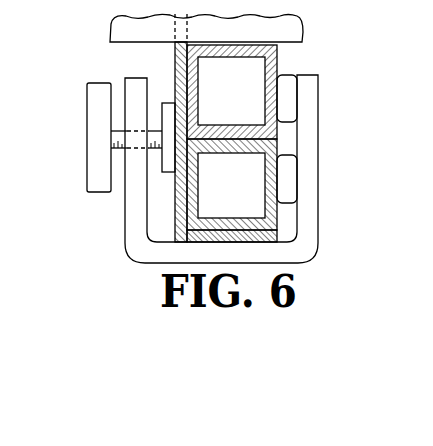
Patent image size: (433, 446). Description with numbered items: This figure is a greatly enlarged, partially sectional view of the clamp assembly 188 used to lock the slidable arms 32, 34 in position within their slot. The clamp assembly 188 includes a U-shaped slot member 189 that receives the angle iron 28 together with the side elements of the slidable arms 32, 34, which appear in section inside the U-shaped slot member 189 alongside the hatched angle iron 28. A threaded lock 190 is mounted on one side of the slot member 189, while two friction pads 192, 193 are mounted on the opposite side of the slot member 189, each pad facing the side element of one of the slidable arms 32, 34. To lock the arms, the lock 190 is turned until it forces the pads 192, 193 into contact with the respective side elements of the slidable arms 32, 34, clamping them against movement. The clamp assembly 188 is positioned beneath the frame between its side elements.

The angle iron 28 is at (174, 65).
The slidable arm 32 is at (265, 100).
The slidable arm 34 is at (245, 219).
The clamp assembly 188 is at (224, 148).
The U-shaped slot member 189 is at (138, 245).
The threaded lock 190 is at (98, 172).
The friction pad 192 is at (287, 82).
The friction pad 193 is at (288, 183).